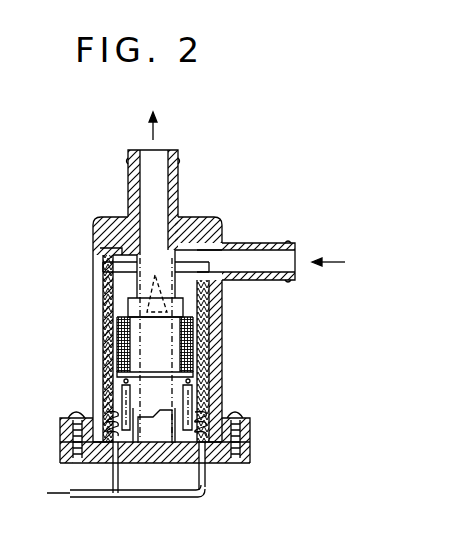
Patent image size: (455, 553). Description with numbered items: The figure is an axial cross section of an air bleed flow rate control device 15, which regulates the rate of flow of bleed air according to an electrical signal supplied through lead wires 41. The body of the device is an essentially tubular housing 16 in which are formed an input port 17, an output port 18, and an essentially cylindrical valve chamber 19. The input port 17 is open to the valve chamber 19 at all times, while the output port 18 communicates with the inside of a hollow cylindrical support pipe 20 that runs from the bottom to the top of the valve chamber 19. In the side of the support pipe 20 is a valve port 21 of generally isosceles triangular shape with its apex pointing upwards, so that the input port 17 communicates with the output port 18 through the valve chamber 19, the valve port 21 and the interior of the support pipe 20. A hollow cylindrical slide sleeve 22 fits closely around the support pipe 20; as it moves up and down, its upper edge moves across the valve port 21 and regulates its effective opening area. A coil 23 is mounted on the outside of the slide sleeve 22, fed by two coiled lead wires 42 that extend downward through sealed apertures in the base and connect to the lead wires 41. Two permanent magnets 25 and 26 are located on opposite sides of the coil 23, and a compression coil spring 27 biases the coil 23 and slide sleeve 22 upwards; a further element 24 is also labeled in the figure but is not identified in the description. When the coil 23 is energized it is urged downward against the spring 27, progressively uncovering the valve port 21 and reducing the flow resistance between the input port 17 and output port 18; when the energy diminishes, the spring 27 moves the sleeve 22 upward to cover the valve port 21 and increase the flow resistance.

The air bleed flow rate control device 15 is at (103, 212).
The tubular housing 16 is at (213, 324).
The input port 17 is at (287, 258).
The output port 18 is at (158, 155).
The valve chamber 19 is at (190, 301).
The support pipe 20 is at (147, 272).
The valve port 21 is at (155, 275).
The slide sleeve 22 is at (130, 308).
The coil 23 is at (193, 371).
The spring 24 is at (193, 393).
The permanent magnet 25 is at (200, 351).
The permanent magnet 26 is at (110, 345).
The compression coil spring 27 is at (193, 462).
The lead wires 41 is at (112, 482).
The coiled lead wires 42 is at (100, 412).